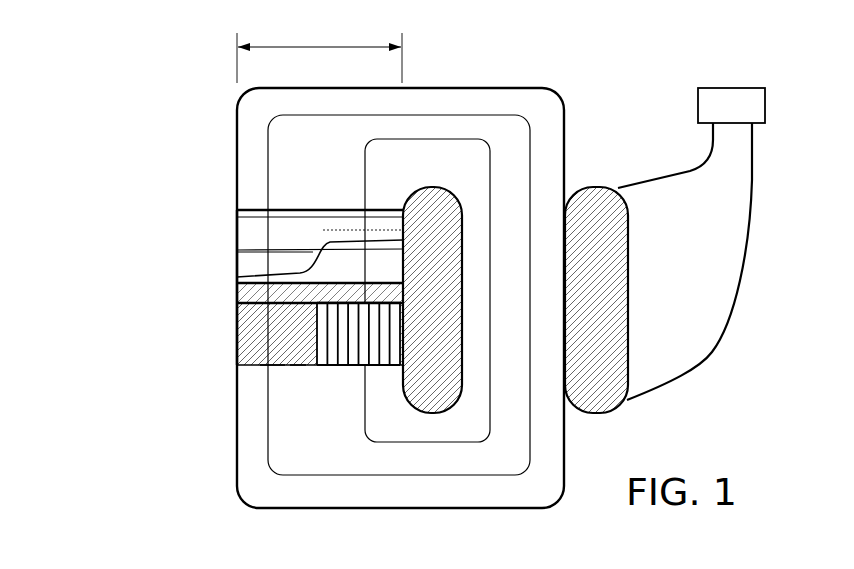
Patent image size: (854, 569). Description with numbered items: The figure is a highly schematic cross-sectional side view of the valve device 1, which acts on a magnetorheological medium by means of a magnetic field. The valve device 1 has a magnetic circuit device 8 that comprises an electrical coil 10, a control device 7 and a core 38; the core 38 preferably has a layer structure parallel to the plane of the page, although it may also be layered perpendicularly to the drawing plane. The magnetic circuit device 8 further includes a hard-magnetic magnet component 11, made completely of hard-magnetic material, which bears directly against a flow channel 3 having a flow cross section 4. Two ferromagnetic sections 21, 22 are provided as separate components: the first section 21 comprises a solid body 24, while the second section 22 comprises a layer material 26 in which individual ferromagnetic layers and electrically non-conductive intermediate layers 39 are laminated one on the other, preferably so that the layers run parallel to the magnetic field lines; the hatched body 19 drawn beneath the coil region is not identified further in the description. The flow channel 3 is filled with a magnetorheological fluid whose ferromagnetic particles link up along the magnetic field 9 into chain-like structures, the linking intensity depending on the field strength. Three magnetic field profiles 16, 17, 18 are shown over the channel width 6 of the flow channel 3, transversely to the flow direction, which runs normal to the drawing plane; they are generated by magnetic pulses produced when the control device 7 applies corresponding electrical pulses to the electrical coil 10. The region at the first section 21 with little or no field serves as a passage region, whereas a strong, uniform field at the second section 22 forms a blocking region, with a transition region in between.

The valve device 1 is at (143, 46).
The flow channel 3 is at (237, 219).
The flow cross section 4 is at (250, 207).
The channel width 6 is at (319, 56).
The control device 7 is at (750, 87).
The magnetic circuit device 8 is at (574, 104).
The magnetic field 9 is at (268, 154).
The electrical coil 10 is at (628, 232).
The hard-magnetic magnet component 11 is at (237, 289).
The first magnetic field profile 16 is at (278, 272).
The second magnetic field profile 17 is at (308, 248).
The third magnetic field profile 18 is at (378, 230).
The core body 19 is at (237, 325).
The first section 21 is at (298, 366).
The second section 22 is at (355, 366).
The solid body 24 is at (270, 366).
The layer material 26 is at (335, 366).
The core 38 is at (491, 97).
The electrically non-conductive intermediate layers 39 is at (405, 313).